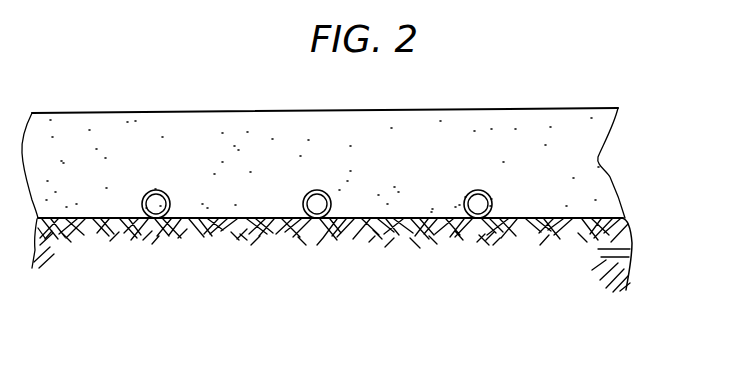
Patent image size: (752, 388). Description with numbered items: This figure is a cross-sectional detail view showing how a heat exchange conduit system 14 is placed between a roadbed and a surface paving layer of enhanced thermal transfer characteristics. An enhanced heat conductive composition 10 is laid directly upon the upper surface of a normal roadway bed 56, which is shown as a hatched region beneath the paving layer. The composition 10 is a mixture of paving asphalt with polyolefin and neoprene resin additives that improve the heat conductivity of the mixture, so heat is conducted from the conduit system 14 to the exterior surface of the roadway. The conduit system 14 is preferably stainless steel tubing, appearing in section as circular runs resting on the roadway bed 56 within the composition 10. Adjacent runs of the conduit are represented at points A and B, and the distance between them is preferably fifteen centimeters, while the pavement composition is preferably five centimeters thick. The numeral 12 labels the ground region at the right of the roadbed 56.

The enhanced heat conductive composition 10 is at (412, 108).
The ground / base 12 is at (632, 245).
The heat exchange conduit system 14 is at (141, 205).
The point A is at (158, 222).
The point B is at (318, 221).
The roadway bed 56 is at (500, 241).